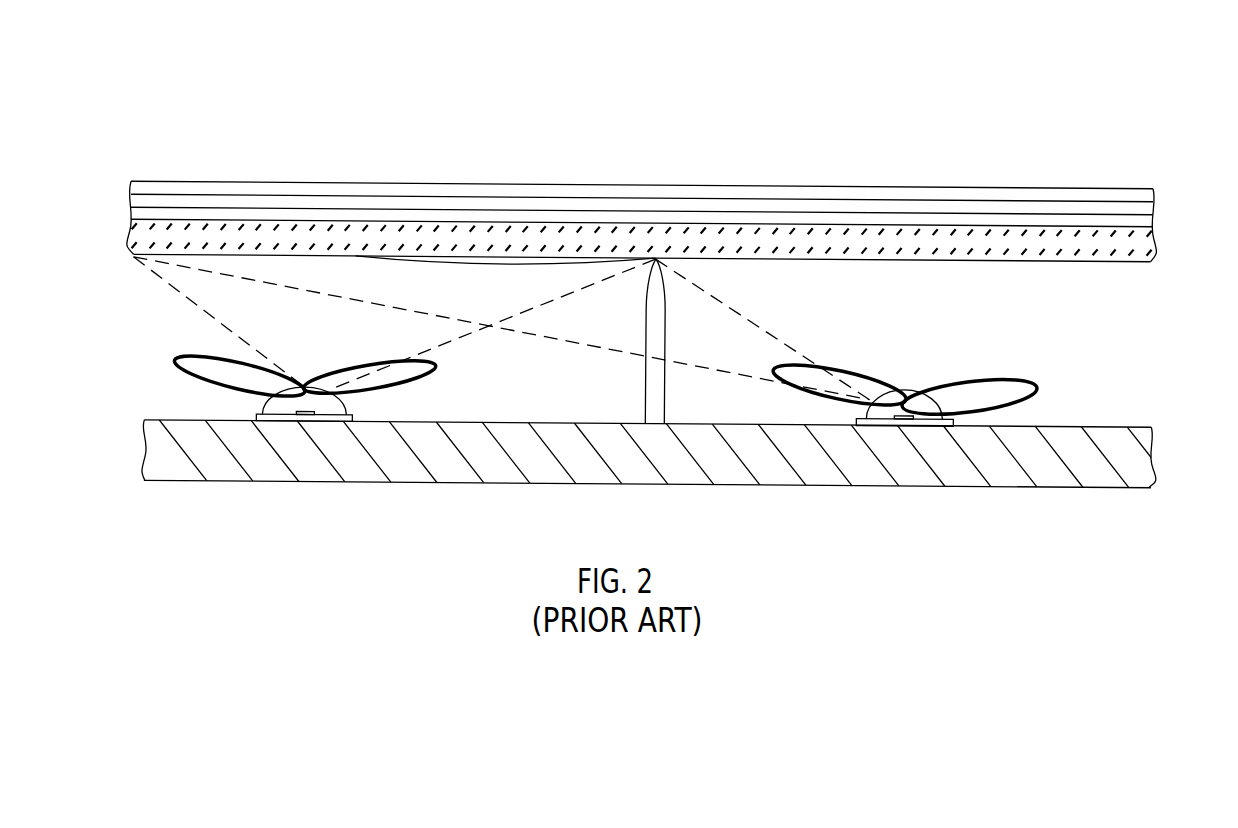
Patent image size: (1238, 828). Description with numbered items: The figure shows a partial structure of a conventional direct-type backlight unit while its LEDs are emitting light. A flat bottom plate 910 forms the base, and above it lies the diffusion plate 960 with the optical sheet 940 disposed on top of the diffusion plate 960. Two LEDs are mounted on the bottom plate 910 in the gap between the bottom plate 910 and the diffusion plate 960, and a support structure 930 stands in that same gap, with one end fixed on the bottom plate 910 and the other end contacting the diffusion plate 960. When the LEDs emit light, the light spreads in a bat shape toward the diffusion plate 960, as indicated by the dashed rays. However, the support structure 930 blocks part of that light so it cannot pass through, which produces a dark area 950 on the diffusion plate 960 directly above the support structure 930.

The bottom plate 910 is at (156, 456).
The support structure 930 is at (658, 400).
The optical sheet 940 is at (1122, 184).
The dark area 950 is at (505, 265).
The diffusion plate 960 is at (958, 242).